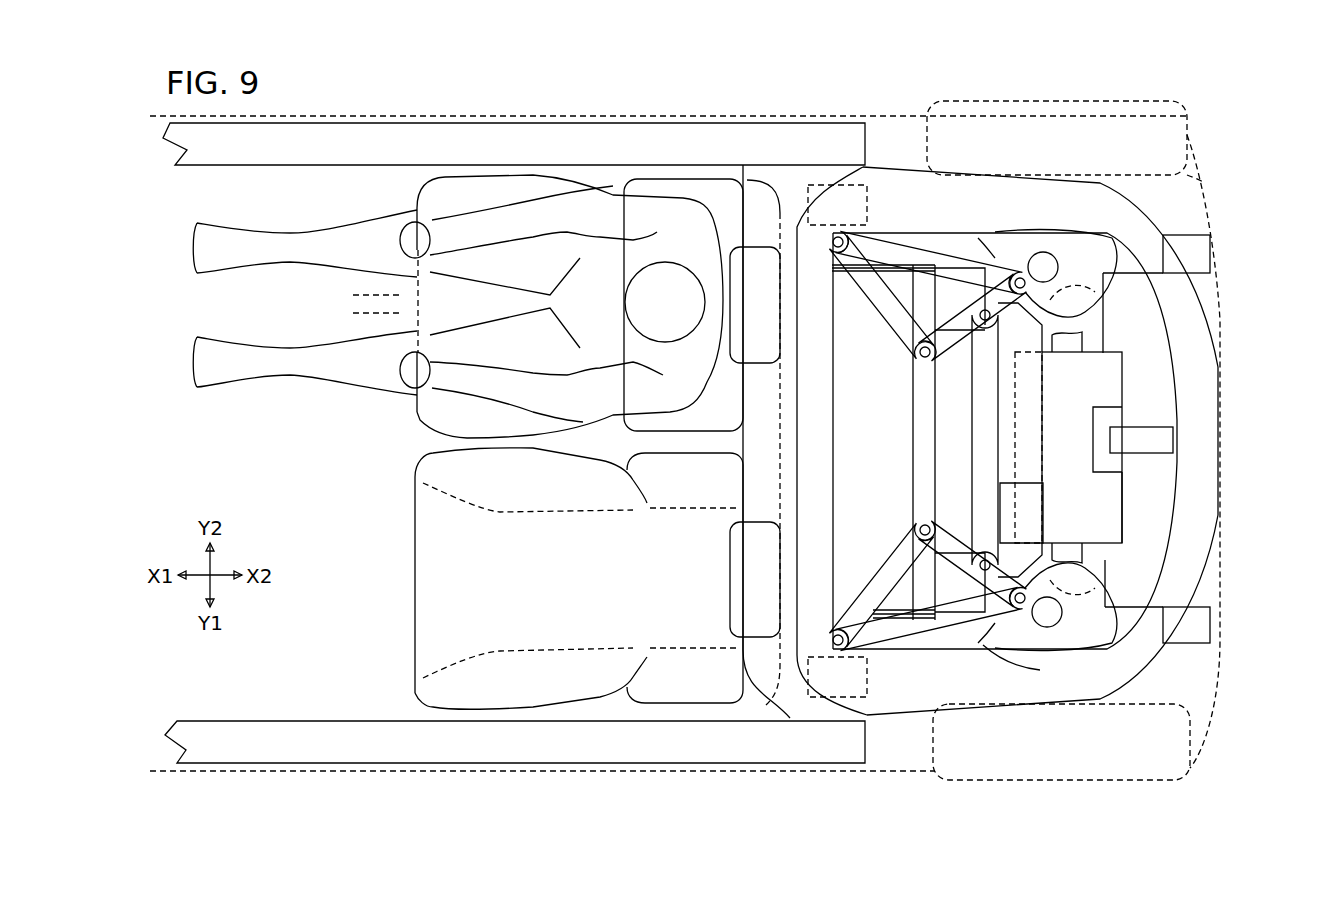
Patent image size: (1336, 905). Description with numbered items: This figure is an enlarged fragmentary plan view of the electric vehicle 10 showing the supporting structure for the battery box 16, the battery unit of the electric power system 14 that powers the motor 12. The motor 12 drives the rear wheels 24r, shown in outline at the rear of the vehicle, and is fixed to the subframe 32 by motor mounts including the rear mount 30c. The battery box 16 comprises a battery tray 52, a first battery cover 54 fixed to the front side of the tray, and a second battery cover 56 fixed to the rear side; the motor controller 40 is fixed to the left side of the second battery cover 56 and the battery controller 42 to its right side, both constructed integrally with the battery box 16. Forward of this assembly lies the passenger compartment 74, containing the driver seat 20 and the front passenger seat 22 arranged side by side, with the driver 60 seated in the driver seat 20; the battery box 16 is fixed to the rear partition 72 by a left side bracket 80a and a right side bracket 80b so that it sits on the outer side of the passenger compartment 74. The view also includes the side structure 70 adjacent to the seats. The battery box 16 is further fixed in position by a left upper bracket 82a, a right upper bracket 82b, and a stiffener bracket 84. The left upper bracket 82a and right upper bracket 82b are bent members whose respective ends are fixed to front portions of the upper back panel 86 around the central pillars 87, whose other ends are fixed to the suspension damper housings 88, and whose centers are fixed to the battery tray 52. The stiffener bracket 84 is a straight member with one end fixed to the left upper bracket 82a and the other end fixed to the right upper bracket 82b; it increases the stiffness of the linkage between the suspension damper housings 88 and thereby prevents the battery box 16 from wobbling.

The electric vehicle 10 is at (392, 100).
The motor 12 is at (1100, 497).
The electric power system 14 is at (648, 528).
The battery box 16 is at (830, 430).
The driver seat 20 is at (710, 178).
The front passenger seat 22 is at (670, 687).
The rear wheels 24r is at (1175, 102).
The rear mount 30c is at (1183, 440).
The subframe 32 is at (1147, 560).
The motor controller 40 is at (1030, 517).
The battery controller 42 is at (1027, 422).
The battery tray 52 is at (923, 480).
The first battery cover 54 is at (900, 290).
The second battery cover 56 is at (958, 282).
The driver 60 is at (603, 265).
The door trim 70 is at (780, 118).
The rear partition 72 is at (836, 426).
The passenger compartment 74 is at (331, 669).
The left side bracket 80a is at (895, 617).
The right side bracket 80b is at (888, 262).
The left upper bracket 82a is at (933, 610).
The right upper bracket 82b is at (885, 308).
The stiffener bracket 84 is at (990, 383).
The upper back panel 86 is at (997, 677).
The central pillars 87 is at (879, 187).
The suspension damper housings 88 is at (1055, 258).